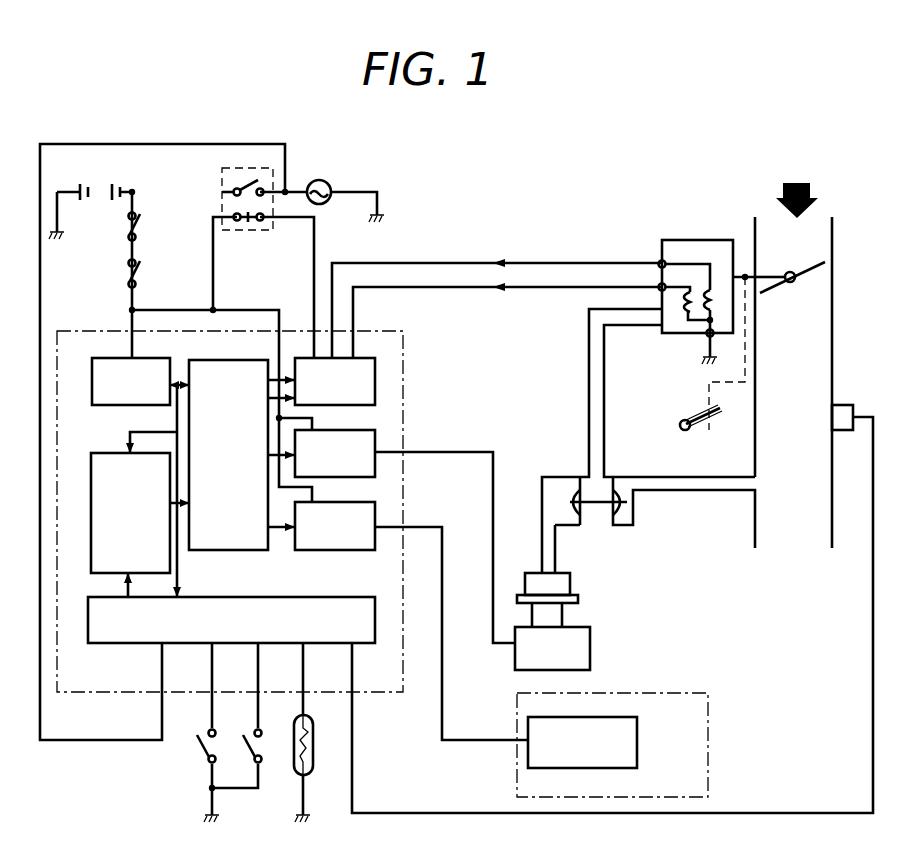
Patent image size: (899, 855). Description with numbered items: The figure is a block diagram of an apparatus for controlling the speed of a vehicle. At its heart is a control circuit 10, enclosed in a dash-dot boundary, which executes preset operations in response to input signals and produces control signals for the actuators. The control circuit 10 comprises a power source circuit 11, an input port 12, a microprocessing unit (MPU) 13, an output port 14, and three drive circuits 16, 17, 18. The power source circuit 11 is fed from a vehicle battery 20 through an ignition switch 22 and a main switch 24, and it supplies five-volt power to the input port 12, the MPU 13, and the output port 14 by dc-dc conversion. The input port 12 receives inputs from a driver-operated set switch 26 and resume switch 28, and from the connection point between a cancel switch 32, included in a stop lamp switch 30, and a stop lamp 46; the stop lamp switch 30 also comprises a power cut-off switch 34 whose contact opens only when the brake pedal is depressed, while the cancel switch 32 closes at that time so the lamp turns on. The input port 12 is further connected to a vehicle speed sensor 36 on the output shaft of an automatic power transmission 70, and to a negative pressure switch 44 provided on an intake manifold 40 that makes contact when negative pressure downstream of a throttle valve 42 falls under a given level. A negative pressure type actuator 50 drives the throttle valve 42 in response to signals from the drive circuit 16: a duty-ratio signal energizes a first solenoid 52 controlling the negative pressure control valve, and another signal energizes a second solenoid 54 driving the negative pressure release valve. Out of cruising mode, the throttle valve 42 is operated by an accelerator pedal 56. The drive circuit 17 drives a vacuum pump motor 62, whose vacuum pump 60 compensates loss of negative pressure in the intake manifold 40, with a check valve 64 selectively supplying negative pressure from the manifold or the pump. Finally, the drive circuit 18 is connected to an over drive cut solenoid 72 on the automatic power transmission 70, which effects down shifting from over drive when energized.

The control circuit 10 is at (403, 335).
The power source circuit 11 is at (90, 374).
The input port 12 is at (355, 597).
The microprocessing unit (MPU) 13 is at (90, 469).
The output port 14 is at (218, 360).
The drive circuit 16 is at (376, 372).
The drive circuit 17 is at (376, 444).
The drive circuit 18 is at (376, 518).
The battery 20 is at (99, 195).
The ignition switch 22 is at (118, 232).
The main switch 24 is at (118, 276).
The set switch 26 is at (202, 752).
The resume switch 28 is at (252, 752).
The stop lamp switch 30 is at (220, 184).
The cancel switch 32 is at (245, 185).
The power cut-off switch 34 is at (247, 225).
The vehicle speed sensor 36 is at (313, 746).
The intake manifold 40 is at (833, 363).
The throttle valve 42 is at (812, 268).
The negative pressure switch 44 is at (850, 405).
The stop lamp 46 is at (325, 180).
The negative pressure type actuator 50 is at (662, 242).
The first solenoid 52 is at (685, 312).
The second solenoid 54 is at (713, 312).
The accelerator pedal 56 is at (712, 367).
The vacuum pump 60 is at (570, 585).
The vacuum pump motor 62 is at (590, 652).
The check valve 64 is at (600, 526).
The automatic power transmission 70 is at (708, 718).
The over drive cut solenoid 72 is at (637, 728).